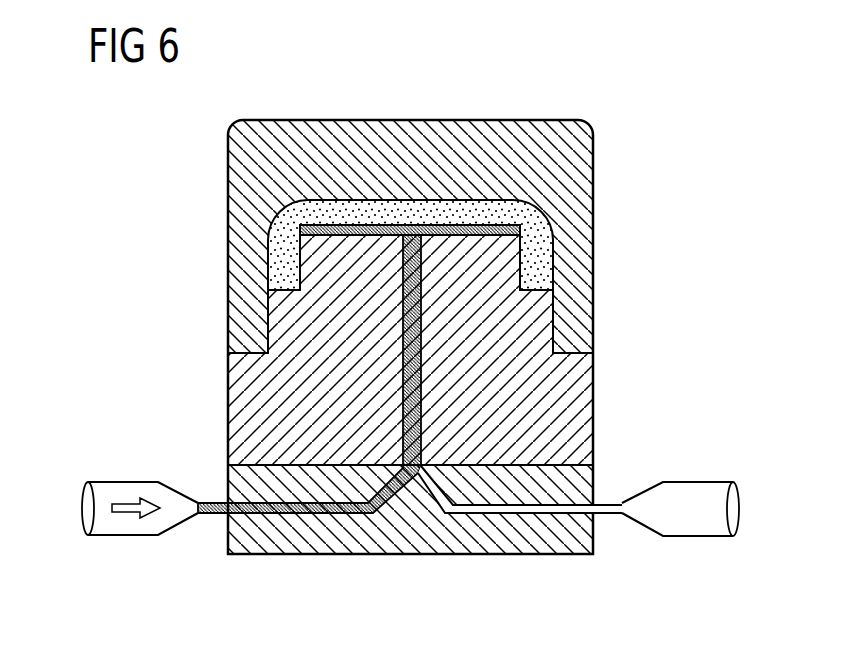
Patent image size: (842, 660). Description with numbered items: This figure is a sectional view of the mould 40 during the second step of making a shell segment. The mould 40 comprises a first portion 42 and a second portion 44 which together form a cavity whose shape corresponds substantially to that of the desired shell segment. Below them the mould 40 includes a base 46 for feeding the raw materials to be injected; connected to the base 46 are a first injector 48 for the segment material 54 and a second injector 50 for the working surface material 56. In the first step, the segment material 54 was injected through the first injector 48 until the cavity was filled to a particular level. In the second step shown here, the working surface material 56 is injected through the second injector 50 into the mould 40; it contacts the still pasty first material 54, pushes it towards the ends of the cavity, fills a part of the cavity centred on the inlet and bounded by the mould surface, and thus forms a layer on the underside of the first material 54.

The mould 40 is at (575, 97).
The first portion 42 is at (586, 201).
The second portion 44 is at (586, 386).
The base 46 is at (425, 548).
The first injector 48 is at (695, 492).
The second injector 50 is at (124, 491).
The segment material 54 is at (403, 200).
The working surface material 56 is at (350, 237).